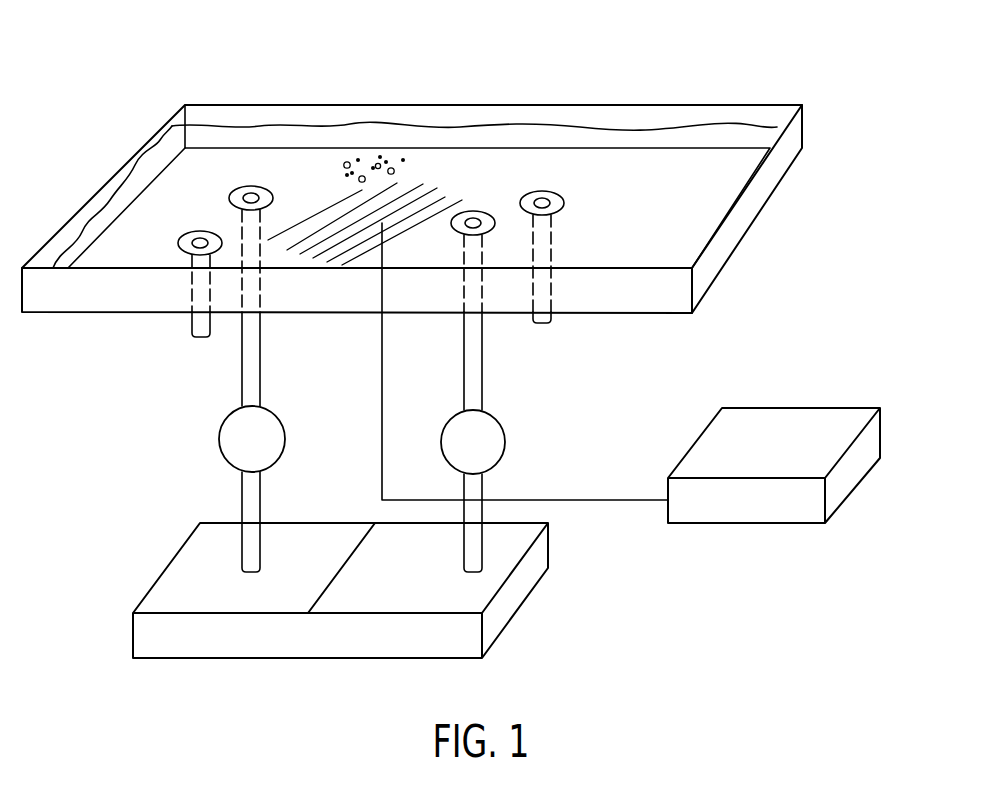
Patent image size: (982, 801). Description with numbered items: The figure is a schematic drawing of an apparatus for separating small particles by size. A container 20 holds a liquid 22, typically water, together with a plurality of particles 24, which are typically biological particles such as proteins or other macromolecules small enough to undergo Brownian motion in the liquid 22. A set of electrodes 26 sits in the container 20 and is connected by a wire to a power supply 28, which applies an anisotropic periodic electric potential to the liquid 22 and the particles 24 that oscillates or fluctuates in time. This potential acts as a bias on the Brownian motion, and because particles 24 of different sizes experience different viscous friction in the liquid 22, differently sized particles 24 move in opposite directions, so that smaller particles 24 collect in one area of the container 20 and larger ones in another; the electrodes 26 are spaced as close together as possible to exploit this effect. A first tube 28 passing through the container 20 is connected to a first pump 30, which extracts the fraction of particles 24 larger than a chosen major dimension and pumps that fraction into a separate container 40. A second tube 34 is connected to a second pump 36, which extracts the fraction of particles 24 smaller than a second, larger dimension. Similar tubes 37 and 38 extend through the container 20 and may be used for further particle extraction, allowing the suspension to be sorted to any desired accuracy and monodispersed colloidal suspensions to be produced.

The container 20 is at (678, 103).
The liquid 22 is at (313, 140).
The particles 24 is at (393, 160).
The set of electrodes 26 is at (423, 222).
The power supply 28 is at (242, 360).
The first pump 30 is at (224, 455).
The second tube 34 is at (482, 348).
The second pump 36 is at (505, 423).
The tube 37 is at (192, 322).
The tube 38 is at (552, 287).
The container 40 is at (525, 600).